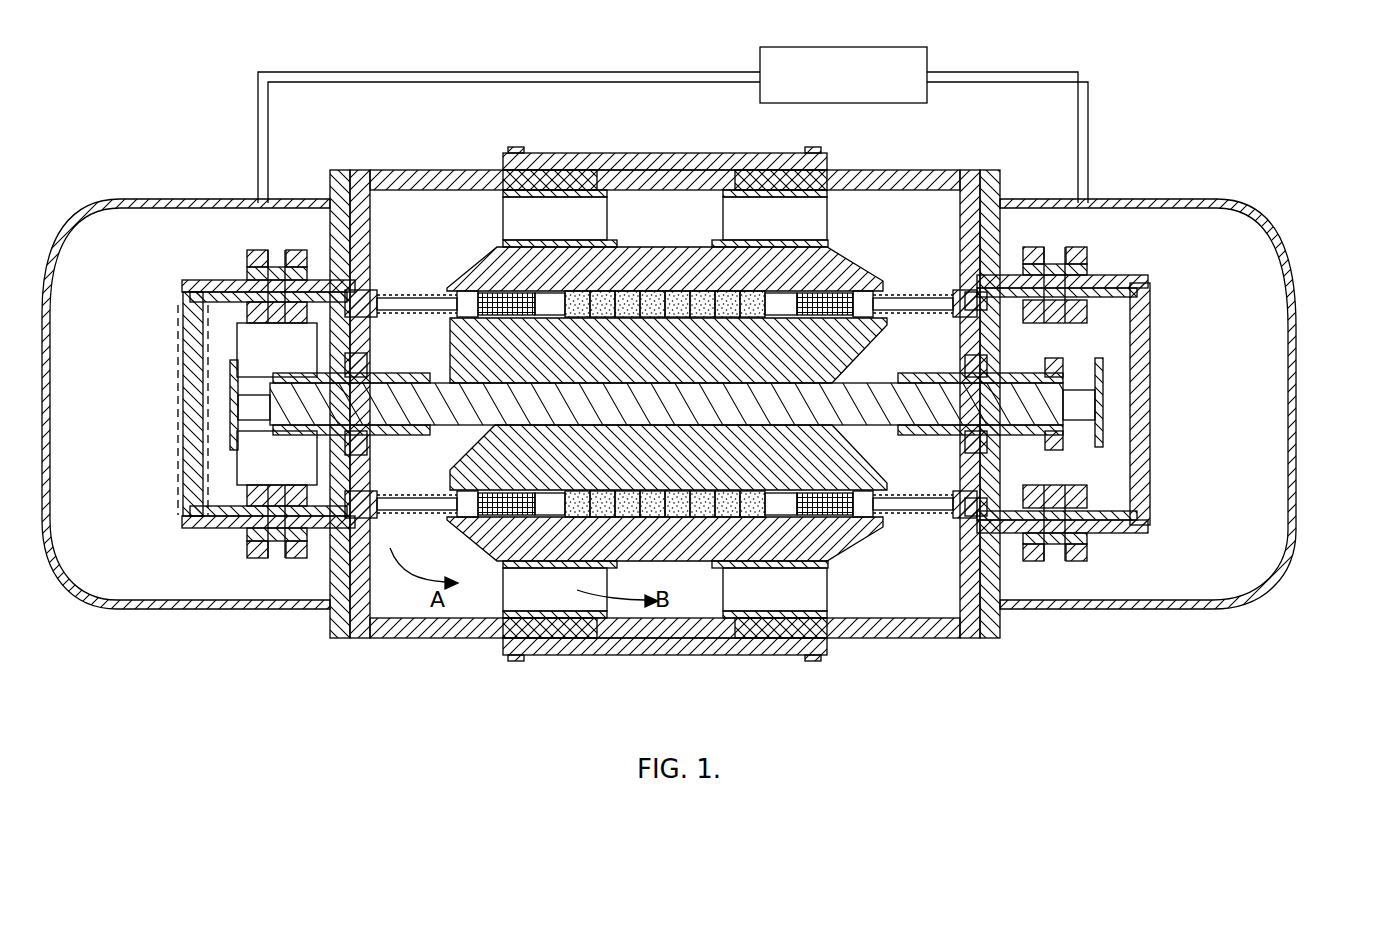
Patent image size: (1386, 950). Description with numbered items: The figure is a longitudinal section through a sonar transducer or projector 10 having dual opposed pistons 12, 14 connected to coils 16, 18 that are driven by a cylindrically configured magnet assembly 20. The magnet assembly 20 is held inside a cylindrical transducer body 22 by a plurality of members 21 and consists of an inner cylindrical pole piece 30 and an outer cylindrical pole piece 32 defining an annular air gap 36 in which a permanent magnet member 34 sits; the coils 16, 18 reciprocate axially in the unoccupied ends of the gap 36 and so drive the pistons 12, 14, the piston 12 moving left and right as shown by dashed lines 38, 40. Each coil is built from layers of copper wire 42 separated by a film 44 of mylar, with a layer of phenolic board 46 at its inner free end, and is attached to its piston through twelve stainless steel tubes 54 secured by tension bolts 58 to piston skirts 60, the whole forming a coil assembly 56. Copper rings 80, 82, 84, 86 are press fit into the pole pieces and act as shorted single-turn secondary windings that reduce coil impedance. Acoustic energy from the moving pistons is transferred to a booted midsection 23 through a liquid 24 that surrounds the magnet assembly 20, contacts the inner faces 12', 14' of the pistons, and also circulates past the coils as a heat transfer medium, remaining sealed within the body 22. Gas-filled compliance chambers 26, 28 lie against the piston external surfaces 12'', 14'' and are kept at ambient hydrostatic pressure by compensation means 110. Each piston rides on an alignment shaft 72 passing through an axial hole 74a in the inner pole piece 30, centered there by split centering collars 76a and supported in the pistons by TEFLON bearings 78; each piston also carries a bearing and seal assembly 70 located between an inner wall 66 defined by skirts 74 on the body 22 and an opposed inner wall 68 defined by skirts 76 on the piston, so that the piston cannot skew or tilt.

The sonar transducer or projector 10 is at (1296, 275).
The piston 12 is at (162, 404).
The inner face of piston 12' is at (249, 467).
The piston external surface 12'' is at (148, 519).
The piston 14 is at (1097, 404).
The inner face of piston 14' is at (1120, 462).
The piston external surface 14'' is at (1195, 437).
The coil 16 is at (505, 290).
The coil 18 is at (845, 282).
The magnet assembly 20 is at (828, 290).
The members 21 is at (503, 216).
The transducer body 22 is at (390, 174).
The booted midsection 23 is at (726, 154).
The liquid 24 is at (407, 611).
The compliance chamber 26 is at (186, 404).
The compliance chamber 28 is at (1148, 404).
The inner cylindrical pole piece 30 is at (870, 340).
The outer cylindrical pole piece 32 is at (655, 290).
The permanent magnet member 34 is at (652, 291).
The annular air gap 36 is at (570, 318).
The dashed line 38 is at (180, 330).
The dashed line 40 is at (300, 370).
The copper wire 42 is at (815, 333).
The film of mylar 44 is at (790, 290).
The layer of phenolic board 46 is at (598, 244).
The stainless steel tubes 54 is at (400, 300).
The coil assembly 56 is at (460, 318).
The tension bolts 58 is at (400, 332).
The piston skirts 60 is at (372, 290).
The inner wall 66 is at (215, 283).
The opposed inner wall 68 is at (262, 305).
The bearing and seal assembly 70 is at (1110, 272).
The alignment shaft 72 is at (365, 378).
The skirts 74 is at (1043, 565).
The axial hole 74a is at (665, 385).
The skirts 76 is at (1010, 352).
The split centering collars 76a is at (872, 382).
The TEFLON bearings 78 is at (455, 381).
The copper ring 80 is at (431, 439).
The copper ring 82 is at (470, 572).
The copper ring 84 is at (865, 470).
The copper ring 86 is at (840, 545).
The compensation means 110 is at (886, 104).